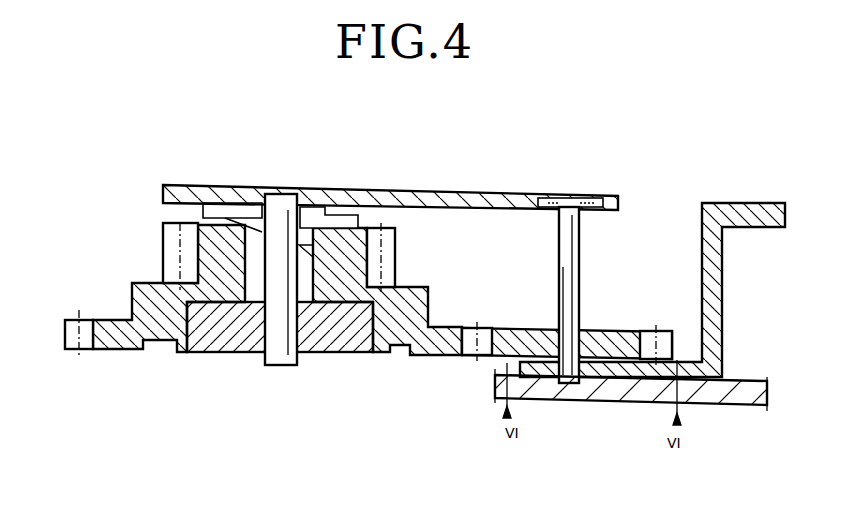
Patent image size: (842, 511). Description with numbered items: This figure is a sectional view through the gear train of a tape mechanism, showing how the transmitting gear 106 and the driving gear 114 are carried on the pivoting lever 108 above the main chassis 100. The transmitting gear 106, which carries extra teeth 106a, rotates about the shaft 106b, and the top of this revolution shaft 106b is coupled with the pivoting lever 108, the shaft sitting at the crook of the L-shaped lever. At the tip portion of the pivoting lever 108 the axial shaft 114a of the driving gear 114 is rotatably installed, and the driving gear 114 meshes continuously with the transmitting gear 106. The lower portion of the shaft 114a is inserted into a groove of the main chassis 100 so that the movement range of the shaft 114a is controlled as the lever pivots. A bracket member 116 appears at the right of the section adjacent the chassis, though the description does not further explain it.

The main chassis 100 is at (744, 398).
The transmitting gear 106 is at (78, 348).
The extra teeth 106a is at (170, 249).
The shaft 106b is at (270, 366).
The pivoting lever 108 is at (482, 191).
The driving gear 114 is at (628, 327).
The axial shaft 114a is at (604, 198).
The L-shaped bracket 116 is at (756, 203).